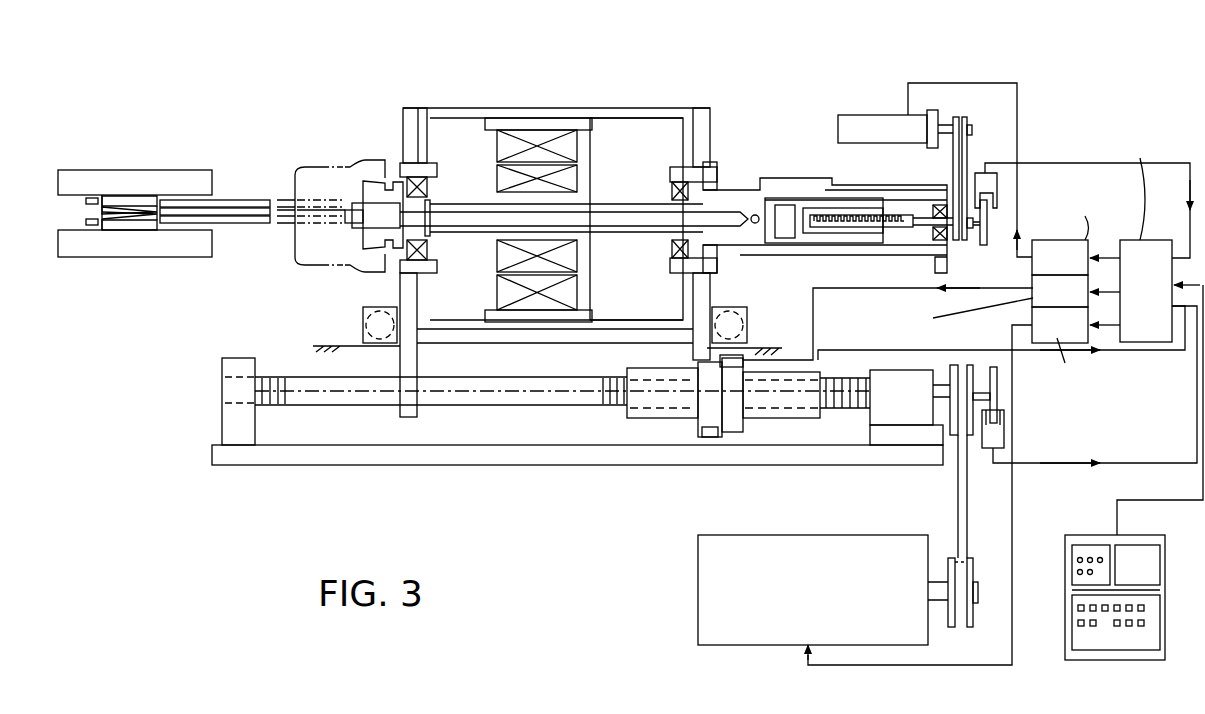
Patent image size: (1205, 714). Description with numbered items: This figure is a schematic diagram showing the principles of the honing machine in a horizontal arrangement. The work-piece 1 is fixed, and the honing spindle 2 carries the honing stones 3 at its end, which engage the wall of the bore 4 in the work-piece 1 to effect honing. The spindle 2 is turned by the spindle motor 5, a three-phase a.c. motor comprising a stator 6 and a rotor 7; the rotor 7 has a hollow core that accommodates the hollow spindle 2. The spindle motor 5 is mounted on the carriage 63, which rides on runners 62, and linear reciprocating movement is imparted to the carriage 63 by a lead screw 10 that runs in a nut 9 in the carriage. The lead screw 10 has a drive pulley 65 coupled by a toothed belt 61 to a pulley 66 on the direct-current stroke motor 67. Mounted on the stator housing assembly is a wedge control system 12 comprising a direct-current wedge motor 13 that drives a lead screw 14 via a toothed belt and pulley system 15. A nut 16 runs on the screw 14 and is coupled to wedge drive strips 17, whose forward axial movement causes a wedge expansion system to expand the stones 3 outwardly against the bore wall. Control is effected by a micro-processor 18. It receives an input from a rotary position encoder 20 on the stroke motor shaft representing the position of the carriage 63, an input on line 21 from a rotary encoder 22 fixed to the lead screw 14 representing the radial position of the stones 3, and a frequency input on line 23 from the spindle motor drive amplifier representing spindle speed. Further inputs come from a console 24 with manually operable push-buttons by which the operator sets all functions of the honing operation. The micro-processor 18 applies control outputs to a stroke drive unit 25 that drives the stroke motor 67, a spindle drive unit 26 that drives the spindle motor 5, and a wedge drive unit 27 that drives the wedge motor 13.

The work-piece 1 is at (130, 170).
The honing spindle 2 is at (250, 200).
The honing stones 3 is at (150, 197).
The bore 4 is at (72, 195).
The spindle motor 5 is at (478, 140).
The stator 6 is at (547, 140).
The rotor 7 is at (575, 181).
The nut 9 is at (730, 395).
The lead screw 10 is at (492, 406).
The wedge control system 12 is at (837, 160).
The wedge motor 13 is at (865, 122).
The lead screw 14 is at (925, 218).
The toothed belt and pulley system 15 is at (970, 152).
The nut 16 is at (893, 213).
The wedge drive strips 17 is at (247, 222).
The micro-processor 18 is at (1128, 233).
The rotary position encoder 20 is at (996, 385).
The line 21 is at (1045, 163).
The rotary encoder 22 is at (993, 233).
The line 23 is at (1132, 351).
The console 24 is at (1083, 531).
The stroke drive unit 25 is at (953, 486).
The spindle drive unit 26 is at (964, 317).
The wedge drive unit 27 is at (1003, 179).
The toothed belt 61 is at (961, 505).
The runners 62 is at (343, 343).
The carriage 63 is at (400, 365).
The drive pulley 65 is at (950, 417).
The pulley 66 is at (967, 622).
The stroke motor 67 is at (813, 590).